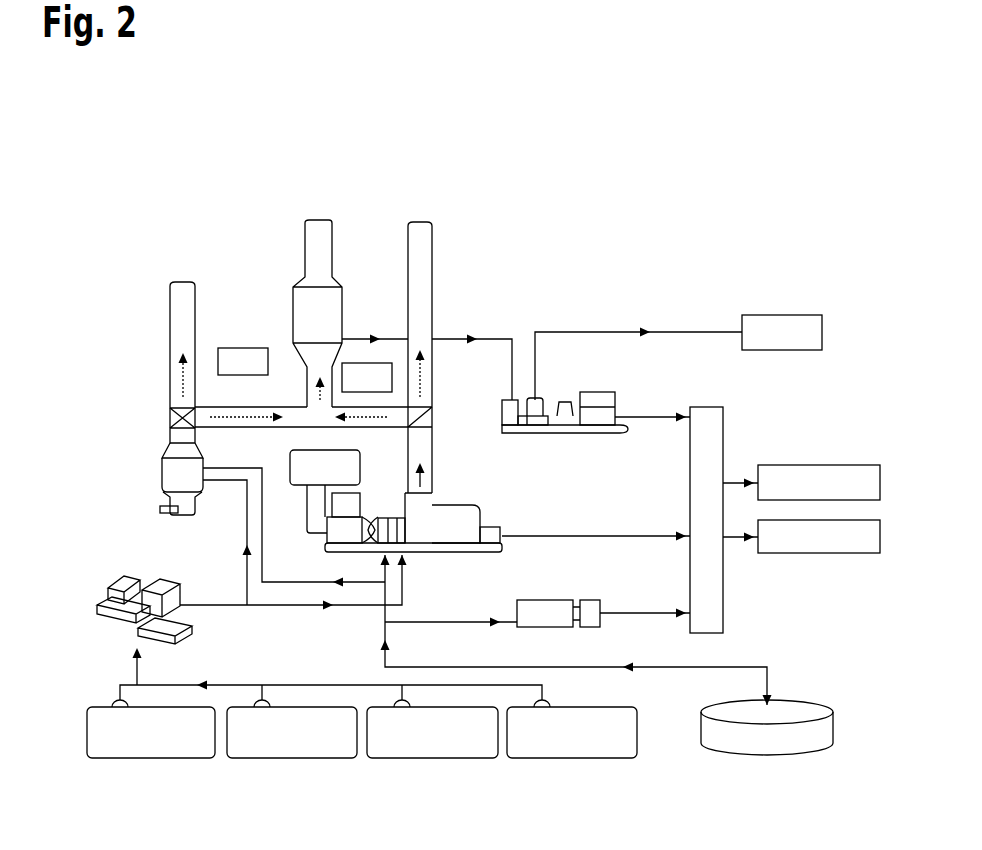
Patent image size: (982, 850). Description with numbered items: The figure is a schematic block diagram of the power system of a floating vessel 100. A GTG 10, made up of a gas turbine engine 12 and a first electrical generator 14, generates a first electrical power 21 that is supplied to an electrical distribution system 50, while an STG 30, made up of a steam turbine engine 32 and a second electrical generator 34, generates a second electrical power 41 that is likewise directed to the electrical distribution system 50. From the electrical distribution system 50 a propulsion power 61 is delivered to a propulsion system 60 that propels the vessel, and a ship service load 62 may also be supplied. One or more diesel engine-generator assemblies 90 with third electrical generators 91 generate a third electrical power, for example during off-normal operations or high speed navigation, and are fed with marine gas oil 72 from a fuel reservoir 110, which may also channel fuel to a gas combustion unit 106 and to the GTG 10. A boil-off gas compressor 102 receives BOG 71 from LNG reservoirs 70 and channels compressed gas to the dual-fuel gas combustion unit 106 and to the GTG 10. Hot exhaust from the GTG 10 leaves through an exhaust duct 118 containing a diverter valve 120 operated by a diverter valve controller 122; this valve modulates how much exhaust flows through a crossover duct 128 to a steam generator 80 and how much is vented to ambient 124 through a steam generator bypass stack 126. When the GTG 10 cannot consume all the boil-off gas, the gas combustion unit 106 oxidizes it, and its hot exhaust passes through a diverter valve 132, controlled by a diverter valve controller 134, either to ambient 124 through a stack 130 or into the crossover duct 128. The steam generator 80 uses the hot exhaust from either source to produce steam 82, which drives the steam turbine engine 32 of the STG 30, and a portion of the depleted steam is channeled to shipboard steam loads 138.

The floating vessel 100 is at (230, 215).
The GTG 10 is at (496, 487).
The gas turbine engine 12 is at (350, 527).
The first electrical generator 14 is at (445, 530).
The first electrical power 21 is at (560, 533).
The STG 30 is at (577, 384).
The steam turbine engine 32 is at (535, 405).
The second electrical generator 34 is at (598, 412).
The second electrical power 41 is at (651, 419).
The electrical distribution system 50 is at (706, 520).
The propulsion system 60 is at (819, 482).
The propulsion power 61 is at (735, 482).
The ship service load 62 is at (819, 536).
The LNG reservoirs 70 is at (124, 770).
The BOG 71 is at (136, 670).
The marine gas oil 72 is at (780, 692).
The steam generator 80 is at (320, 307).
The steam 82 is at (505, 338).
The diesel engine-generator assemblies 90 is at (545, 592).
The third electrical generators 91 is at (592, 612).
The boil-off gas compressor 102 is at (145, 567).
The gas combustion unit 106 is at (188, 453).
The fuel reservoir 110 is at (767, 727).
The exhaust duct 118 is at (432, 475).
The diverter valve 120 is at (432, 418).
The diverter valve controller 122 is at (432, 427).
The ambient 124 is at (395, 229).
The steam generator bypass stack 126 is at (420, 265).
The crossover duct 128 is at (295, 413).
The stack 130 is at (183, 308).
The diverter valve 132 is at (178, 413).
The diverter valve controller 134 is at (195, 407).
The shipboard steam loads 138 is at (782, 332).